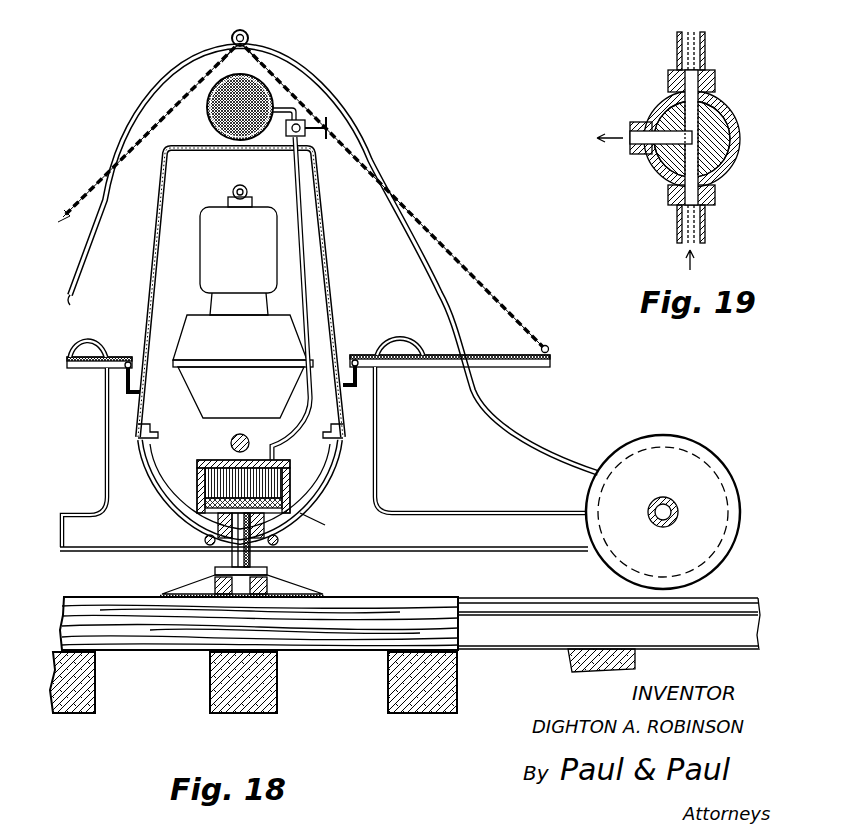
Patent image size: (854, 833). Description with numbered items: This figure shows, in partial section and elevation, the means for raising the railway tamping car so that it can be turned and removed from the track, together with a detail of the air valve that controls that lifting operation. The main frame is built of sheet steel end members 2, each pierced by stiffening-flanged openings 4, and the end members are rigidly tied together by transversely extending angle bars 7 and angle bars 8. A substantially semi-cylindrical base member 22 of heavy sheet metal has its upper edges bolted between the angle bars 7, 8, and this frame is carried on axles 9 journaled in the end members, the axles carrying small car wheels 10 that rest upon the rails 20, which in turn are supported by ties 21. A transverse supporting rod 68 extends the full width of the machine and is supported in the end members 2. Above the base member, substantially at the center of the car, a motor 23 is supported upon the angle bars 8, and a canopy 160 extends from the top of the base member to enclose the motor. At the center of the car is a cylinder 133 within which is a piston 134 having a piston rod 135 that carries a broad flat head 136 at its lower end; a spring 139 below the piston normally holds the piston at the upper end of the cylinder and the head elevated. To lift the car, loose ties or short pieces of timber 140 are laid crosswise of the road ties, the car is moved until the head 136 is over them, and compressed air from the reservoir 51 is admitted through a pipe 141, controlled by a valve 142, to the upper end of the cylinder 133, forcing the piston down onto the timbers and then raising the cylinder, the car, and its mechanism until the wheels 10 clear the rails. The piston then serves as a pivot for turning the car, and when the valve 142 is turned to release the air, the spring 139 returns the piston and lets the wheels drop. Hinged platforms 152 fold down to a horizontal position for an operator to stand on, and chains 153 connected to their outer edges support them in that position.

In FIG. 18, the end member 2 is at (125, 136).
In FIG. 18, the opening 4 is at (324, 459).
In FIG. 18, the angle bar 7 is at (148, 428).
In FIG. 18, the angle bar 8 is at (140, 410).
In FIG. 18, the axle 9 is at (678, 510).
In FIG. 18, the car wheel 10 is at (718, 455).
In FIG. 18, the rail 20 is at (730, 597).
In FIG. 18, the tie 21 is at (211, 685).
In FIG. 18, the base member 22 is at (345, 458).
In FIG. 18, the motor 23 is at (197, 313).
In FIG. 18, the reservoir 51 is at (264, 83).
In FIG. 18, the transverse supporting rod 68 is at (207, 541).
In FIG. 18, the cylinder 133 is at (292, 487).
In FIG. 18, the piston 134 is at (198, 518).
In FIG. 18, the piston rod 135 is at (234, 553).
In FIG. 18, the head 136 is at (300, 583).
In FIG. 18, the spring 139 is at (303, 520).
In FIG. 18, the timber 140 is at (330, 630).
In FIG. 18, the pipe 141 is at (310, 277).
In FIG. 19, the pipe 141 is at (707, 223).
In FIG. 18, the valve 142 is at (301, 122).
In FIG. 19, the valve 142 is at (732, 108).
In FIG. 18, the platform 152 is at (121, 357).
In FIG. 18, the chain 153 is at (180, 100).
In FIG. 18, the canopy 160 is at (151, 262).